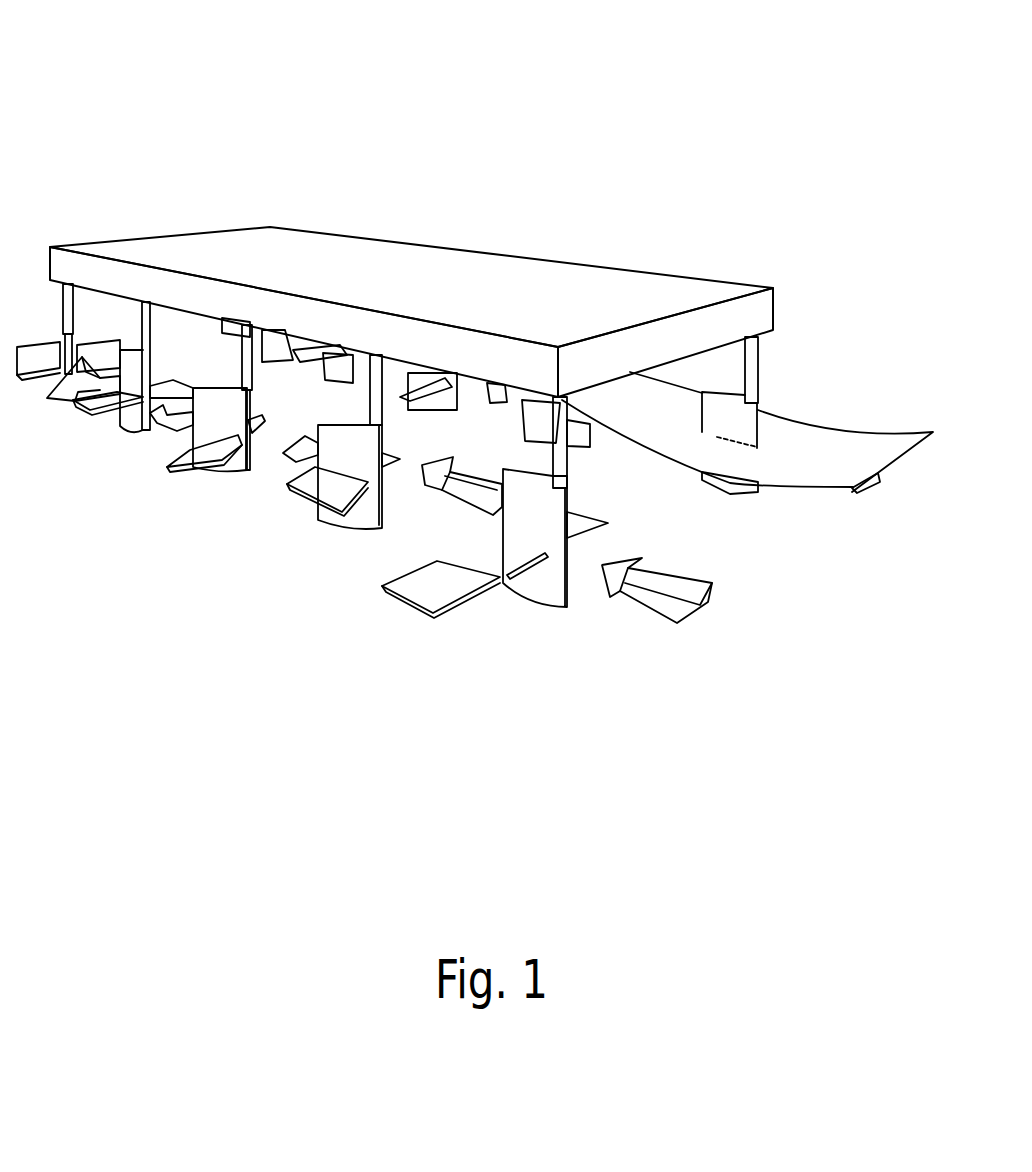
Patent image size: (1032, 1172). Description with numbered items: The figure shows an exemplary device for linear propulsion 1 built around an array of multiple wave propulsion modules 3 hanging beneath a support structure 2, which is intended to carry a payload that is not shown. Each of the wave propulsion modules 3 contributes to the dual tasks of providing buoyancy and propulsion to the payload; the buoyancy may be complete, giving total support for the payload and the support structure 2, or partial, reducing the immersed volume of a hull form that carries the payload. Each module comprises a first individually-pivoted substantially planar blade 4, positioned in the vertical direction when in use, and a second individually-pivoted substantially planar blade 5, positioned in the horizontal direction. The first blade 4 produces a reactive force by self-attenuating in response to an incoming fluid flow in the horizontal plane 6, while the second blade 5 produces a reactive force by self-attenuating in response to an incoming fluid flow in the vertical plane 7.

The device for linear propulsion 1 is at (188, 138).
The support structure 2 is at (468, 273).
The wave propulsion modules 3 is at (428, 642).
The first individually-pivoted substantially planar blade 4 is at (543, 582).
The second individually-pivoted substantially planar blade 5 is at (441, 583).
The incoming fluid flow in the horizontal plane 6 is at (695, 607).
The incoming fluid flow in the vertical plane 7 is at (472, 475).